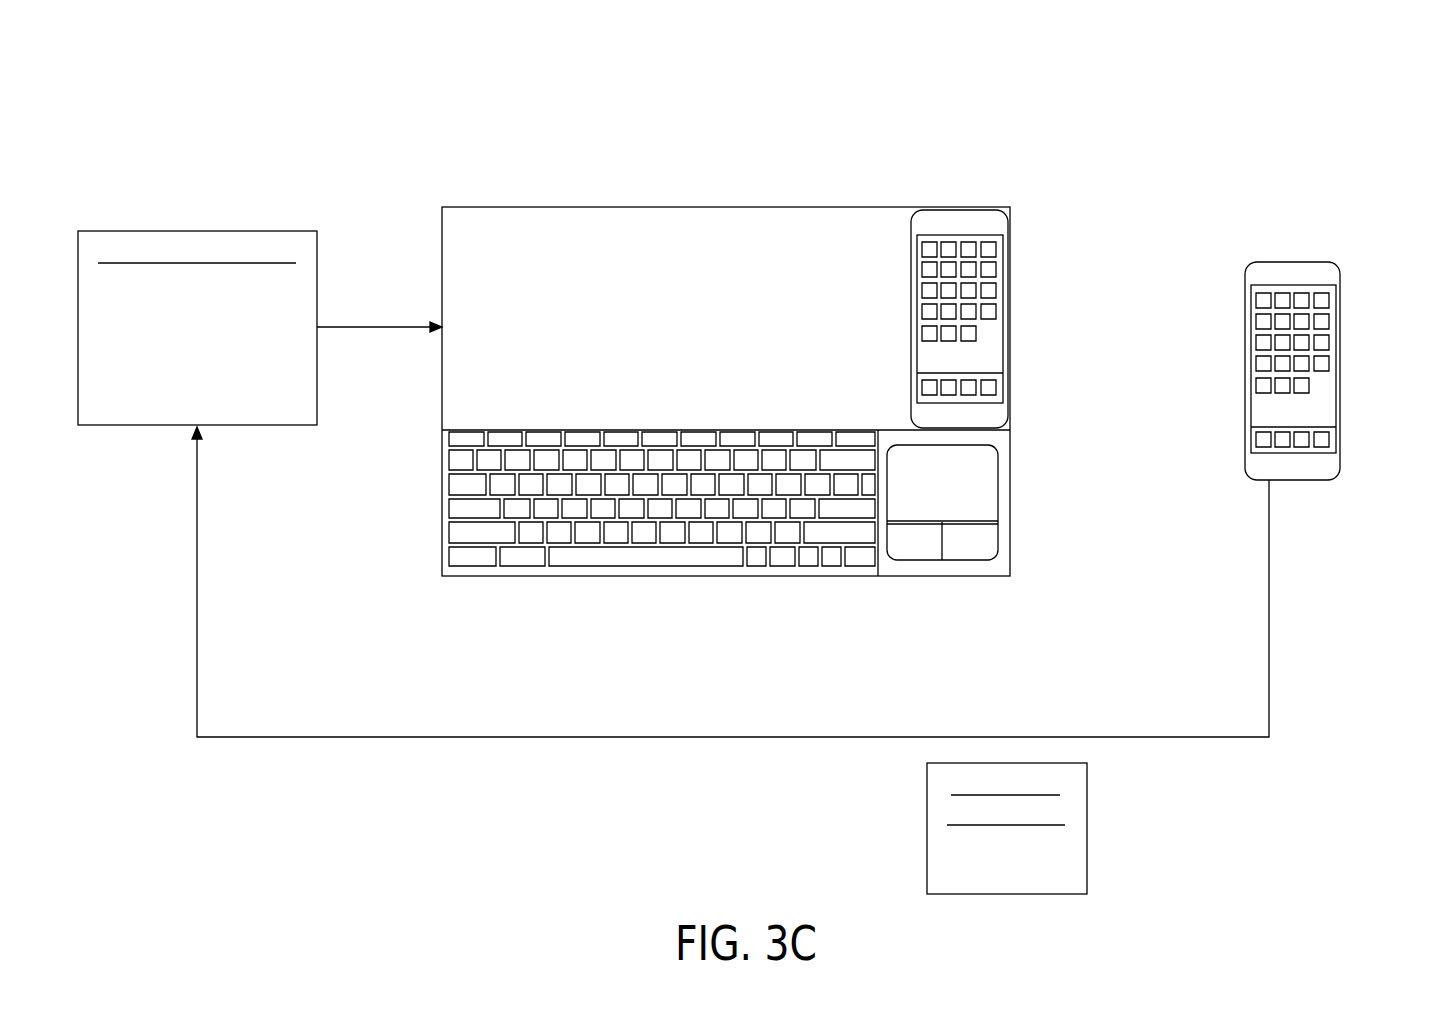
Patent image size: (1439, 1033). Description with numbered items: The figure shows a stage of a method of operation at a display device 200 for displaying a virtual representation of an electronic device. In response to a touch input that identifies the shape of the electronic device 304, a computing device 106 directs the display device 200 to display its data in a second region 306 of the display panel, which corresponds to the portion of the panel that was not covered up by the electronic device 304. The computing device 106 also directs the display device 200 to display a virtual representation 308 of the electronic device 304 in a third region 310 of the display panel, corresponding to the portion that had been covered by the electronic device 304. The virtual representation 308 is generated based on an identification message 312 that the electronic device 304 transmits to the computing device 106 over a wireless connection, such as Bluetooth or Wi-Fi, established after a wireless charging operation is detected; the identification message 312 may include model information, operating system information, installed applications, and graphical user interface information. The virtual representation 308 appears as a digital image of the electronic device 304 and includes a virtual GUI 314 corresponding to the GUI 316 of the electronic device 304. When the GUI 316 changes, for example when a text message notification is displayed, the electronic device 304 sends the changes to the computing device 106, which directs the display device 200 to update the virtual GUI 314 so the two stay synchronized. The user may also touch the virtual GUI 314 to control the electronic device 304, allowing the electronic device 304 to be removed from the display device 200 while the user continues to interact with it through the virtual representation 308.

The display device 200 is at (1060, 84).
The computing device 106 is at (197, 328).
The second region 306 is at (662, 328).
The virtual representation 308 is at (911, 300).
The third region 310 is at (955, 200).
The virtual graphical user interface 314 is at (985, 347).
The electronic device 304 is at (1243, 355).
The GUI 316 is at (1317, 403).
The identification message 312 is at (1007, 828).